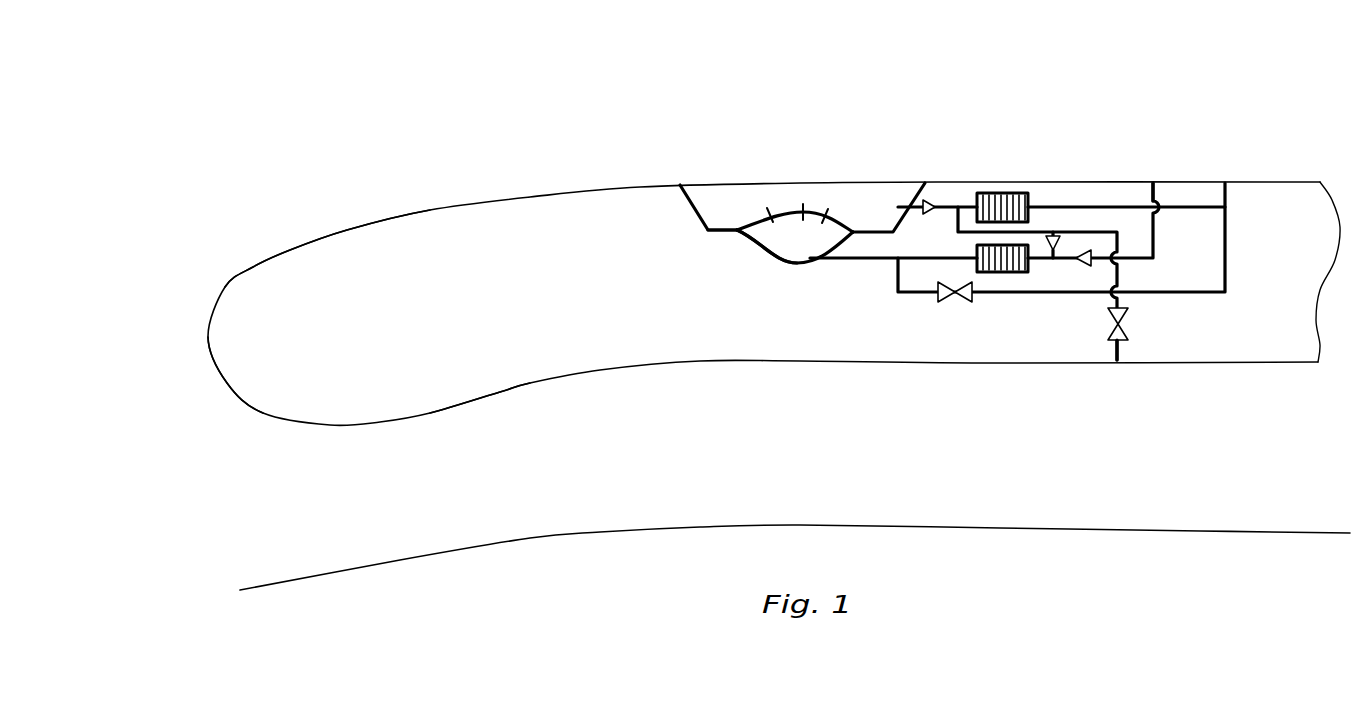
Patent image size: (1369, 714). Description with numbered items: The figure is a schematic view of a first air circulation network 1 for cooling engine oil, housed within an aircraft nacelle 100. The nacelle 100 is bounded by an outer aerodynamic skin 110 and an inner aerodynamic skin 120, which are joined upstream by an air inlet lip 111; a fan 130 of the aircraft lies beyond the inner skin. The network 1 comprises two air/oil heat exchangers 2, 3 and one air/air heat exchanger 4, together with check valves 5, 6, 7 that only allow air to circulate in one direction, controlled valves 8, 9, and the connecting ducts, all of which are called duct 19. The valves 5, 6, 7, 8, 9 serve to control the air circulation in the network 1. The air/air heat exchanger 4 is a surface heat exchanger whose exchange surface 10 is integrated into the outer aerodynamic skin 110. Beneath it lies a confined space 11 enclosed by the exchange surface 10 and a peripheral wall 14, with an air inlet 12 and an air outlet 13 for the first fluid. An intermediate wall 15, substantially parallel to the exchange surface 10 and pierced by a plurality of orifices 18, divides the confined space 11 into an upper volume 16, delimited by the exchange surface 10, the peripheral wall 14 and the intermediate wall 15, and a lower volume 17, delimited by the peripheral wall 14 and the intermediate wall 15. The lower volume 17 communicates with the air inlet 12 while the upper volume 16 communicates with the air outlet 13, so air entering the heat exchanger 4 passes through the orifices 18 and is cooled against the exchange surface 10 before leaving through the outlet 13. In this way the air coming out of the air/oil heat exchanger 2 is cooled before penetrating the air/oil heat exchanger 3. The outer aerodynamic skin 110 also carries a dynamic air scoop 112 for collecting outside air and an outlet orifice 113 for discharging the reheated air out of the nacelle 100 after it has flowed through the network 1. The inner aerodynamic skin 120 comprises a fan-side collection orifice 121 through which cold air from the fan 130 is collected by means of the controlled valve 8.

The aircraft nacelle 100 is at (345, 120).
The outer aerodynamic skin 110 is at (255, 268).
The upstream air inlet lip 111 is at (225, 383).
The inner aerodynamic skin 120 is at (604, 370).
The fan 130 is at (992, 447).
The exchange surface 10 is at (720, 183).
The air outlet 13 is at (905, 205).
The intermediate wall 15 is at (815, 205).
The orifices 18 is at (772, 208).
The lower volume 17 is at (790, 240).
The peripheral wall 14 is at (757, 245).
The air/air heat exchanger 4 is at (713, 238).
The upper volume 16 is at (708, 203).
The confined space 11 is at (730, 208).
The air inlet 12 is at (812, 260).
The check valve 7 is at (930, 198).
The first air circulation network 1 is at (1080, 200).
The air/oil heat exchanger 3 is at (1033, 193).
The air/oil heat exchanger 2 is at (1033, 271).
The check valve 6 is at (1058, 236).
The check valve 5 is at (1080, 262).
The controlled valve 9 is at (952, 300).
The controlled valve 8 is at (1110, 328).
The duct 19 is at (947, 258).
The dynamic air scoop 112 is at (1153, 181).
The outlet orifice 113 is at (1225, 181).
The fan-side collection orifice 121 is at (1118, 365).